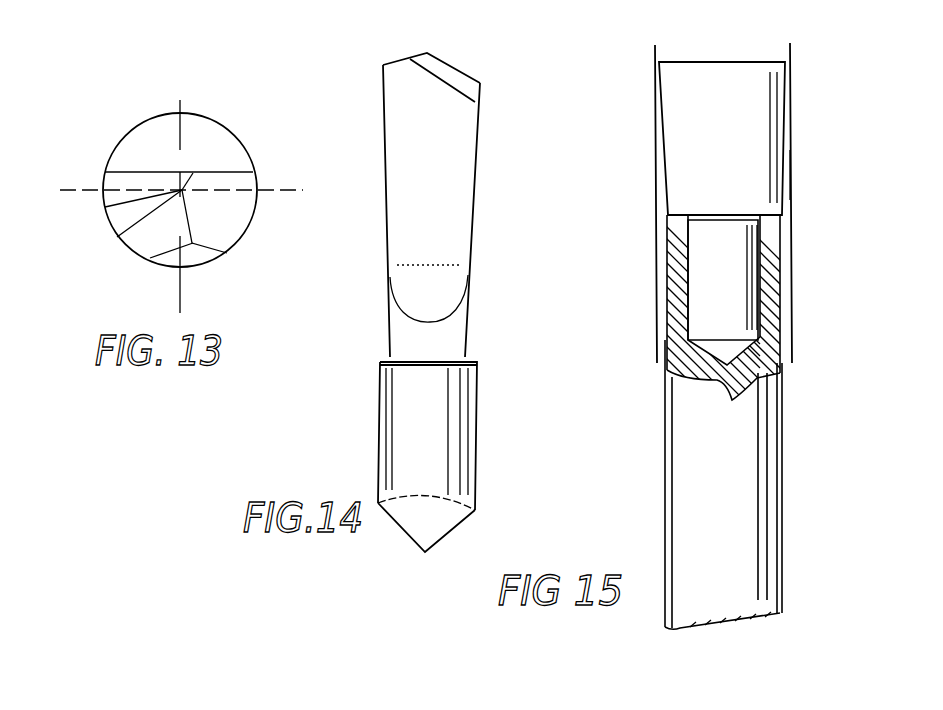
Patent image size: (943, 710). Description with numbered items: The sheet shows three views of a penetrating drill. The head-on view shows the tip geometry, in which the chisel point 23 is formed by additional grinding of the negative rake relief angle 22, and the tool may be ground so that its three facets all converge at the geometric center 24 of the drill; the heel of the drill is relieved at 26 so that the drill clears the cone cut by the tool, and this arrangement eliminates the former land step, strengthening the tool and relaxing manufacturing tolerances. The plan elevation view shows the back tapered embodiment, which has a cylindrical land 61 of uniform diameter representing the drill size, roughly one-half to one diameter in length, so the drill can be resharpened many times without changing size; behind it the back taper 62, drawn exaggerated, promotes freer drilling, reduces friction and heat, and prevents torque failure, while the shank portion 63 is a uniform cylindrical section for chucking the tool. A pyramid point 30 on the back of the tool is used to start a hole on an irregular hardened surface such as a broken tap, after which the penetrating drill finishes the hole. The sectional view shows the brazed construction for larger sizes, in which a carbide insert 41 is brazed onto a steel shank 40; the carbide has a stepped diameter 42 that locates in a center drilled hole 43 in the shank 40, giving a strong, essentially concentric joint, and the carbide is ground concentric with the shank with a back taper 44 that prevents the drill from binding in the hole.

In FIG. 13, the negative rake relief angle 22 is at (120, 183).
In FIG. 13, the chisel point 23 is at (195, 182).
In FIG. 13, the geometric center 24 is at (117, 237).
In FIG. 13, the relieved heel 26 is at (210, 253).
In FIG. 14, the pyramid point 30 is at (441, 524).
In FIG. 15, the steel shank 40 is at (727, 476).
In FIG. 15, the carbide insert 41 is at (727, 144).
In FIG. 15, the stepped diameter 42 is at (730, 284).
In FIG. 15, the center drilled hole 43 is at (668, 370).
In FIG. 15, the back taper 44 is at (790, 183).
In FIG. 14, the cylindrical land 61 is at (374, 63).
In FIG. 14, the back taper 62 is at (376, 125).
In FIG. 14, the shank portion 63 is at (400, 420).